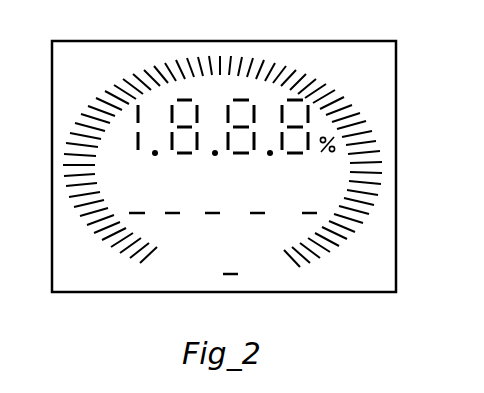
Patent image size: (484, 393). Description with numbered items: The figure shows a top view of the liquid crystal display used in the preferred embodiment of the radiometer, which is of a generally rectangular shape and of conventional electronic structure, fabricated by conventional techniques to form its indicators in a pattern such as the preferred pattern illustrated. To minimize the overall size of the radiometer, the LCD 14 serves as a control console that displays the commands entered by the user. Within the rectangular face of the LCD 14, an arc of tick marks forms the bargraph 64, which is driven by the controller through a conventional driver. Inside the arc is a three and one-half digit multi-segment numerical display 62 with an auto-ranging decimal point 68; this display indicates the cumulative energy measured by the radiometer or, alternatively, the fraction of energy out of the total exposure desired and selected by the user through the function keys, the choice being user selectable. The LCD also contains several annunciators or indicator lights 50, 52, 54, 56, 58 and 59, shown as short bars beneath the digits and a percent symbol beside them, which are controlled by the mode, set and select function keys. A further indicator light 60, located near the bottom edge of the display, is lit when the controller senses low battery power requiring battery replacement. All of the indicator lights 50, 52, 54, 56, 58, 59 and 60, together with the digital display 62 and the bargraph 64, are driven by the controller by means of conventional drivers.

The LCD 14 is at (231, 40).
The indicator light 50 is at (131, 219).
The indicator light 52 is at (173, 219).
The indicator light 54 is at (210, 219).
The indicator light 56 is at (259, 219).
The indicator light 58 is at (312, 219).
The indicator light 59 is at (318, 129).
The indicator light 60 is at (226, 280).
The numerical display 62 is at (281, 95).
The bargraph 64 is at (134, 71).
The decimal point 68 is at (158, 164).